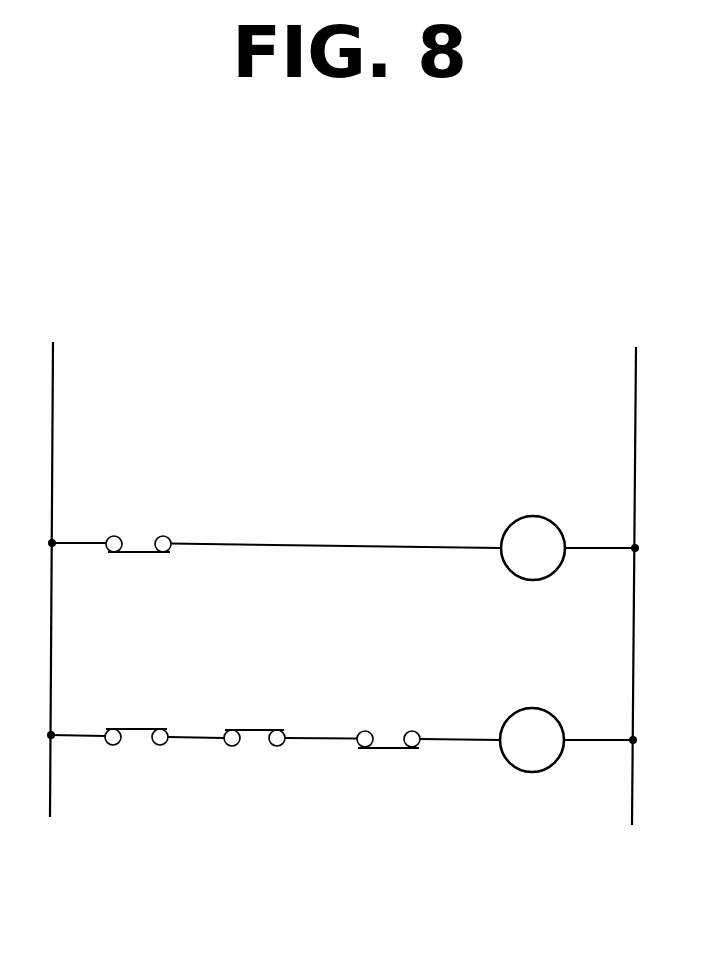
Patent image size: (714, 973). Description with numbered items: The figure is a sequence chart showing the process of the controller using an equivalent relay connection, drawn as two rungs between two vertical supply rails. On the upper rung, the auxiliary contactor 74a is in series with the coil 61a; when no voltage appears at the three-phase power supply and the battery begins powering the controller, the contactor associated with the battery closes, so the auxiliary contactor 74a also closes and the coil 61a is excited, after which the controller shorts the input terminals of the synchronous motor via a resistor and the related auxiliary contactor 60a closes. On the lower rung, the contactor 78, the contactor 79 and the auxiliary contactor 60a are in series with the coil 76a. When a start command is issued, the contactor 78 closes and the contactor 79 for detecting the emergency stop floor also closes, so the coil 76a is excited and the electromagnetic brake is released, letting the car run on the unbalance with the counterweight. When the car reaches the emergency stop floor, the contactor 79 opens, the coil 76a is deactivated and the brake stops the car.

The auxiliary contactor 74a is at (147, 530).
The coil 61a is at (533, 517).
The contactor 78 is at (137, 730).
The contactor 79 is at (262, 730).
The auxiliary contactor 60a is at (397, 730).
The coil 76a is at (532, 708).